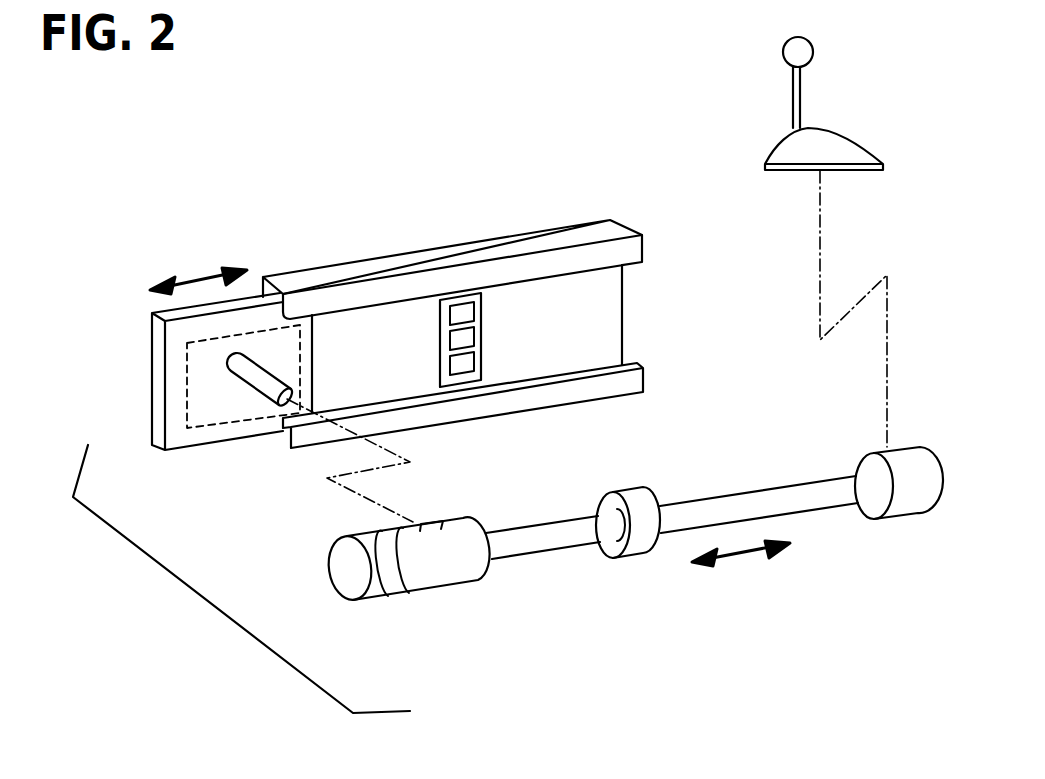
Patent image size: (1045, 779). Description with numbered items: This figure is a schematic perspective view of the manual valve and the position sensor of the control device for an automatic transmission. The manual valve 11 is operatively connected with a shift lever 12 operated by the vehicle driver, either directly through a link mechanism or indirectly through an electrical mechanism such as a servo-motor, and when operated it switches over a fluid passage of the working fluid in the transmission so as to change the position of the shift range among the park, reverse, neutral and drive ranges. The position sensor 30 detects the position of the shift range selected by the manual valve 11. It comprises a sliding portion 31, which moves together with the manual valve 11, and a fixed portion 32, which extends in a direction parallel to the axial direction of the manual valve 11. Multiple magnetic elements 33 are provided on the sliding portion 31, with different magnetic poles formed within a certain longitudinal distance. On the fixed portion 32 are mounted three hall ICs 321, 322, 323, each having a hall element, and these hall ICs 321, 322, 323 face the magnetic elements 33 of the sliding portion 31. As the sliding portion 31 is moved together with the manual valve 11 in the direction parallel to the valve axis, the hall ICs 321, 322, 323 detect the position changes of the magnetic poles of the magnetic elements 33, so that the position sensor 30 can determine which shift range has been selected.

The manual valve 11 is at (500, 563).
The shift lever 12 is at (803, 87).
The position sensor 30 is at (403, 193).
The sliding portion 31 is at (152, 385).
The fixed portion 32 is at (332, 266).
The hall IC 321 is at (481, 297).
The hall IC 322 is at (481, 333).
The hall IC 323 is at (481, 363).
The magnetic elements 33 is at (217, 427).